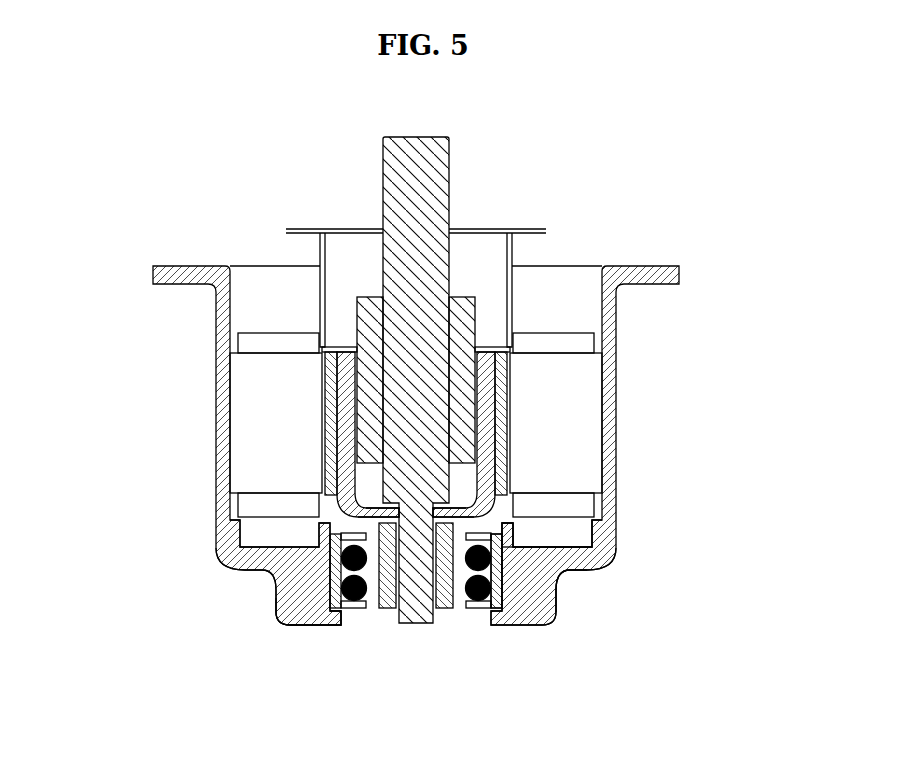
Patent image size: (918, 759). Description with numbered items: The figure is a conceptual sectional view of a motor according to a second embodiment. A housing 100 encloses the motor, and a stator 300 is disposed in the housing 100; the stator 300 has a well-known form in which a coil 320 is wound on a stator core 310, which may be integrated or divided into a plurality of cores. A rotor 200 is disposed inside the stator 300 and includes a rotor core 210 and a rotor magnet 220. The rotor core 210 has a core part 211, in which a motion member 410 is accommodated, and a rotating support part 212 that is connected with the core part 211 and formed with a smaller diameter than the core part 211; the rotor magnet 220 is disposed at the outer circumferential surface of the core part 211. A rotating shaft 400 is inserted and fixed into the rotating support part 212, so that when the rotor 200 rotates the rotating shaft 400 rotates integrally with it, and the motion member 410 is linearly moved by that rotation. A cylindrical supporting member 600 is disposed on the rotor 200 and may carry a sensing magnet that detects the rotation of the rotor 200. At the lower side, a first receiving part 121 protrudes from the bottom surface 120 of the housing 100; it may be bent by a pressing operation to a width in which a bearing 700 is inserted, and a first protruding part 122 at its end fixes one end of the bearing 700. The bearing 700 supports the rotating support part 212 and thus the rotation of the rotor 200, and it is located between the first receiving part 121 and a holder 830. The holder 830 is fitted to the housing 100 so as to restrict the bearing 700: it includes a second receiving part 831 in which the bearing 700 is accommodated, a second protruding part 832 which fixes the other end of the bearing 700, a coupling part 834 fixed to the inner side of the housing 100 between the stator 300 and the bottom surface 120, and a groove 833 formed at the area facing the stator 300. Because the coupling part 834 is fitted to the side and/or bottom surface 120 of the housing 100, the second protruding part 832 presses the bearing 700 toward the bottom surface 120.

The housing 100 is at (616, 294).
The bottom surface 120 is at (303, 612).
The first receiving part 121 is at (288, 617).
The first protruding part 122 is at (333, 616).
The rotor 200 is at (272, 450).
The rotor core 210 is at (297, 450).
The core part 211 is at (345, 443).
The rotating support part 212 is at (335, 520).
The rotor magnet 220 is at (328, 373).
The stator 300 is at (519, 421).
The stator core 310 is at (580, 418).
The coil 320 is at (575, 343).
The rotating shaft 400 is at (417, 452).
The motion member 410 is at (455, 460).
The supporting member 600 is at (520, 229).
The bearing 700 is at (458, 605).
The holder 830 is at (630, 566).
The second receiving part 831 is at (494, 597).
The second protruding part 832 is at (501, 520).
The groove 833 is at (570, 530).
The coupling part 834 is at (537, 580).